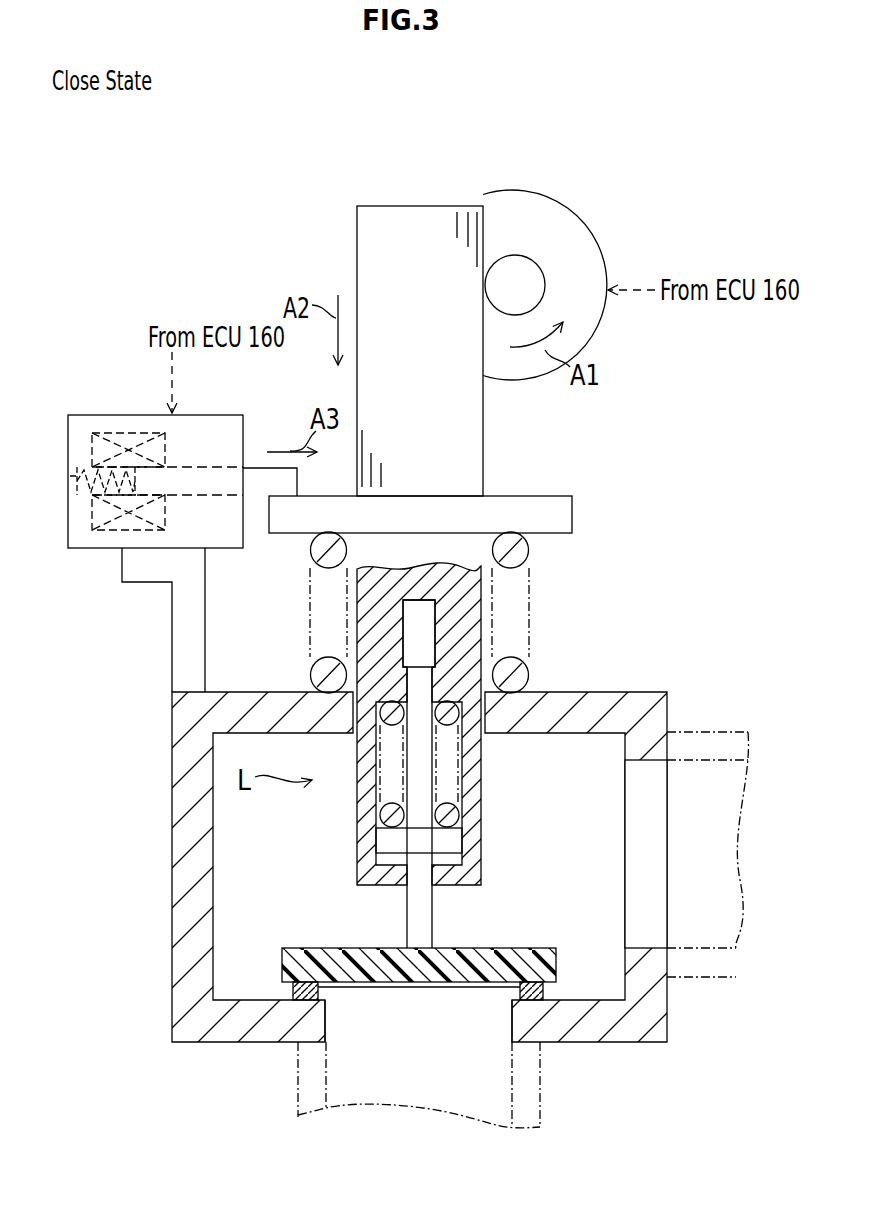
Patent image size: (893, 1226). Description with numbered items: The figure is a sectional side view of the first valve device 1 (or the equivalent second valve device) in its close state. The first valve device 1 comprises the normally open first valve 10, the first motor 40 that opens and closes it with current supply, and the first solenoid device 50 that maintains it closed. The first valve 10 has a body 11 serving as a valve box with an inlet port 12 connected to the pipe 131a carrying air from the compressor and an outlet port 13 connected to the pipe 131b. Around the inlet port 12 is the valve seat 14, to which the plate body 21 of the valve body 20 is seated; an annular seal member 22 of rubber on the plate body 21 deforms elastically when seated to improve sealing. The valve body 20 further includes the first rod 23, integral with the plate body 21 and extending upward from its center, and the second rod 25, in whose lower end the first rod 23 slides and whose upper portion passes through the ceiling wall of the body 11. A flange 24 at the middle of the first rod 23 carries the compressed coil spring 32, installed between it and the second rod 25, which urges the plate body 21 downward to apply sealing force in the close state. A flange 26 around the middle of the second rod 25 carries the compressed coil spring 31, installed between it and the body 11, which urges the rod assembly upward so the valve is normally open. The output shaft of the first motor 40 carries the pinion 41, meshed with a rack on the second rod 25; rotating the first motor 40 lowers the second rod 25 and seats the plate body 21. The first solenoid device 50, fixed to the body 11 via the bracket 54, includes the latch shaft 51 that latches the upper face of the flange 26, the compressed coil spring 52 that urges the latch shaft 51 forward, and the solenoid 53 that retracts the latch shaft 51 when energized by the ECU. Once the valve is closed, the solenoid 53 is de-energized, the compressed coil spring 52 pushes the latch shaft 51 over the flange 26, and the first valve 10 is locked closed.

The first valve device 1 is at (199, 199).
The first solenoid device 50 is at (106, 412).
The solenoid 53 is at (92, 443).
The compressed coil spring 52 is at (75, 481).
The latch shaft 51 is at (253, 470).
The bracket 54 is at (171, 635).
The first valve 10 is at (613, 486).
The body 11 is at (621, 689).
The outlet port 13 is at (648, 945).
The inlet port 12 is at (326, 1033).
The valve seat 14 is at (242, 1035).
The seal member 22 is at (295, 991).
The valve body 20 is at (626, 611).
The second rod 25 is at (355, 263).
The flange 26 is at (296, 535).
The compressed coil spring 31 is at (529, 621).
The compressed coil spring 32 is at (456, 790).
The flange 24 is at (457, 838).
The first rod 23 is at (433, 932).
The plate body 21 is at (340, 945).
The first motor 40 is at (551, 194).
The pinion 41 is at (537, 263).
The pipe 131a is at (298, 1100).
The pipe 131b is at (736, 977).